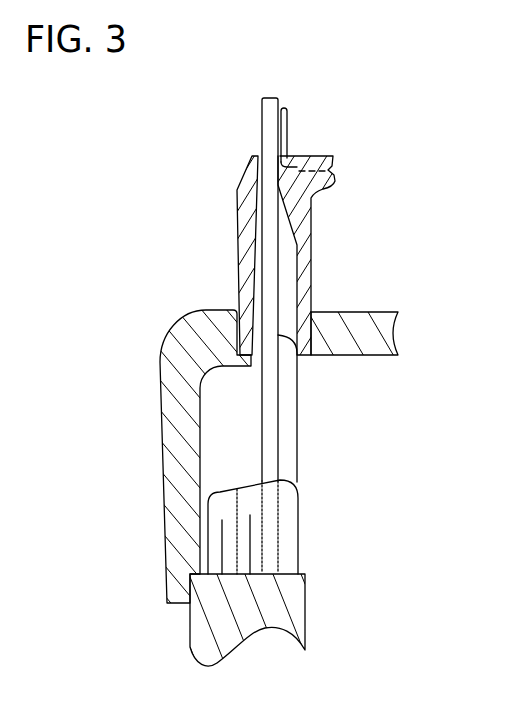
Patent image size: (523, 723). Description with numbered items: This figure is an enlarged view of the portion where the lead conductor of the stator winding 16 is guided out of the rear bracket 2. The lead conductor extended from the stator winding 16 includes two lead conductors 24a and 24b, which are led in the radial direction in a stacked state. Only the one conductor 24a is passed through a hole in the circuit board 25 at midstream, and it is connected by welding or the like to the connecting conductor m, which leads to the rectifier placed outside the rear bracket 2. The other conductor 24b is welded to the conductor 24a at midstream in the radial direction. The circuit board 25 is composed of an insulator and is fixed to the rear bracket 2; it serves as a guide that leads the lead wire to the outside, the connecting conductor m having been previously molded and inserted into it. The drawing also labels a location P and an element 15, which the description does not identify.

The rear bracket 2 is at (324, 431).
The plate portion P is at (342, 314).
The circuit board 25 is at (300, 230).
The connecting conductor m is at (288, 128).
The lead conductor 24a is at (272, 442).
The lead conductor 24b is at (287, 427).
The stator winding 16 is at (273, 533).
The plunger 15 is at (268, 605).